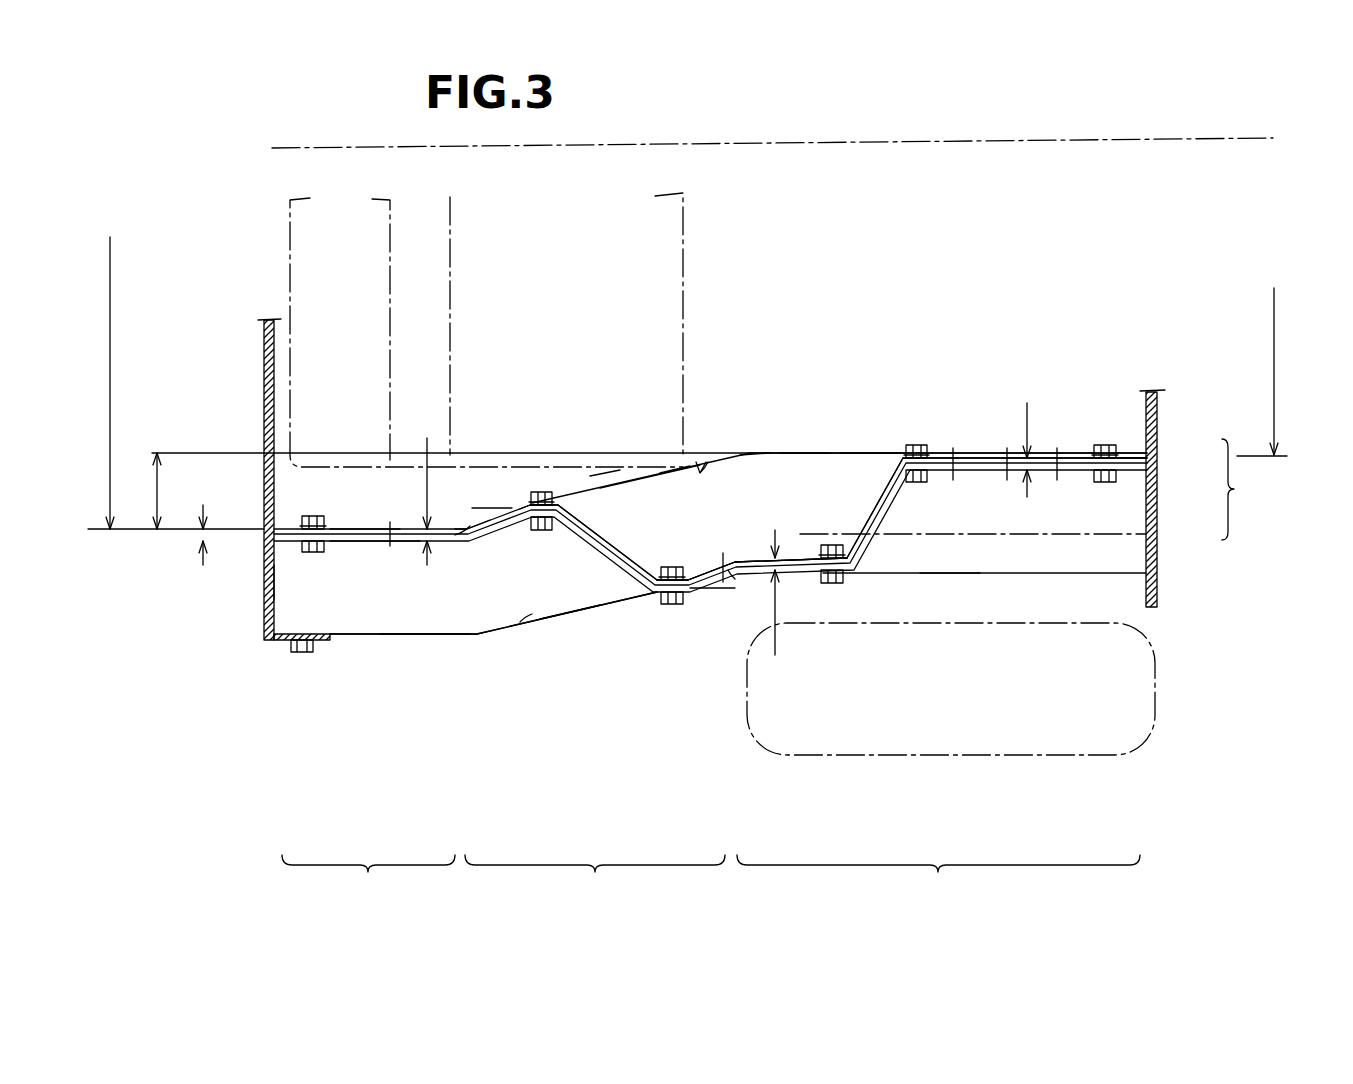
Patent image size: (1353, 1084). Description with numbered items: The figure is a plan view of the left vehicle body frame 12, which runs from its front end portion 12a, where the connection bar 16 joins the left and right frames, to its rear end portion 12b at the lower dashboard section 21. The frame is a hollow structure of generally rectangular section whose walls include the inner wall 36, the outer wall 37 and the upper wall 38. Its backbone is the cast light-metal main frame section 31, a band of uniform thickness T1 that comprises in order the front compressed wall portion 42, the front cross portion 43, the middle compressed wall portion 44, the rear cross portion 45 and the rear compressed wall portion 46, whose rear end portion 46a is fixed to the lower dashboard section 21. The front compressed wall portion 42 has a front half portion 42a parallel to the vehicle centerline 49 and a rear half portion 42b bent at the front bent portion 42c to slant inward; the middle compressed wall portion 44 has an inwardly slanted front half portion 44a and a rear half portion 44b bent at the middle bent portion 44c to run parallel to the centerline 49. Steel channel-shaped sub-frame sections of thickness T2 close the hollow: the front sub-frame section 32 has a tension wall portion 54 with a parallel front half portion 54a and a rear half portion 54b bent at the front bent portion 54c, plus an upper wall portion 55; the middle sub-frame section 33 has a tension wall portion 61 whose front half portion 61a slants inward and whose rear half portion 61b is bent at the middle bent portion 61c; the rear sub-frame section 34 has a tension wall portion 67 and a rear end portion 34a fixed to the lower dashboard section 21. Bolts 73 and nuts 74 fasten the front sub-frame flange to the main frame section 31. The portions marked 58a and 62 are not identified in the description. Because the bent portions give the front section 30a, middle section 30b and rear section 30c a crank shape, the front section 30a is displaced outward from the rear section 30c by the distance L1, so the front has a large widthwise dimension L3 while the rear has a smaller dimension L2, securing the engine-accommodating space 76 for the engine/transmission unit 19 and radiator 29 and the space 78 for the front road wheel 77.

The vehicle body frame 12 is at (828, 312).
The front end portion 12a is at (280, 583).
The rear end portion 12b is at (1255, 489).
The connection bar 16 is at (264, 380).
The engine/transmission unit 19 is at (683, 215).
The lower dashboard section 21 is at (1160, 405).
The radiator 29 is at (290, 250).
The front section 30a is at (368, 880).
The middle section 30b is at (595, 880).
The rear section 30c is at (938, 880).
The main frame section 31 is at (357, 525).
The front sub-frame section 32 is at (433, 640).
The middle sub-frame section 33 is at (670, 463).
The rear sub-frame section 34 is at (1047, 575).
The rear end portion 34a is at (1148, 530).
The inner wall 36 is at (597, 487).
The outer wall 37 is at (590, 613).
The upper wall 38 is at (347, 603).
The front compressed wall portion 42 is at (420, 533).
The front half portion 42a is at (360, 522).
The rear half portion 42b is at (518, 500).
The front bent portion 42c is at (473, 520).
The front cross portion 43 is at (614, 548).
The middle compressed wall portion 44 is at (793, 573).
The front half portion 44a is at (708, 585).
The rear half portion 44b is at (810, 580).
The middle bent portion 44c is at (740, 580).
The rear cross portion 45 is at (877, 510).
The rear compressed wall portion 46 is at (1068, 455).
The rear end portion 46a is at (1148, 458).
The centerline 49 is at (830, 147).
The tension wall portion 54 is at (400, 637).
The front half portion 54a is at (352, 637).
The rear half portion 54b is at (632, 594).
The front bent portion 54c is at (458, 637).
The upper wall portion 55 is at (313, 600).
The bracket lower surface 58a is at (375, 543).
The tension wall portion 61 is at (832, 452).
The front half portion 61a is at (643, 473).
The upper floor panel flat portion 61b is at (800, 450).
The middle bent portion 61c is at (755, 450).
The rear floor 62 is at (847, 477).
The tension wall portion 67 is at (950, 575).
The bolts 73 is at (927, 477).
The nuts 74 is at (922, 445).
The engine-accommodating space 76 is at (442, 500).
The front road wheel 77 is at (893, 755).
The space 78 is at (990, 603).
The distance L1 is at (144, 491).
The widthwise dimension L2 is at (1274, 372).
The widthwise dimension L3 is at (93, 383).
The thickness T1 is at (207, 521).
The thickness T2 is at (729, 535).